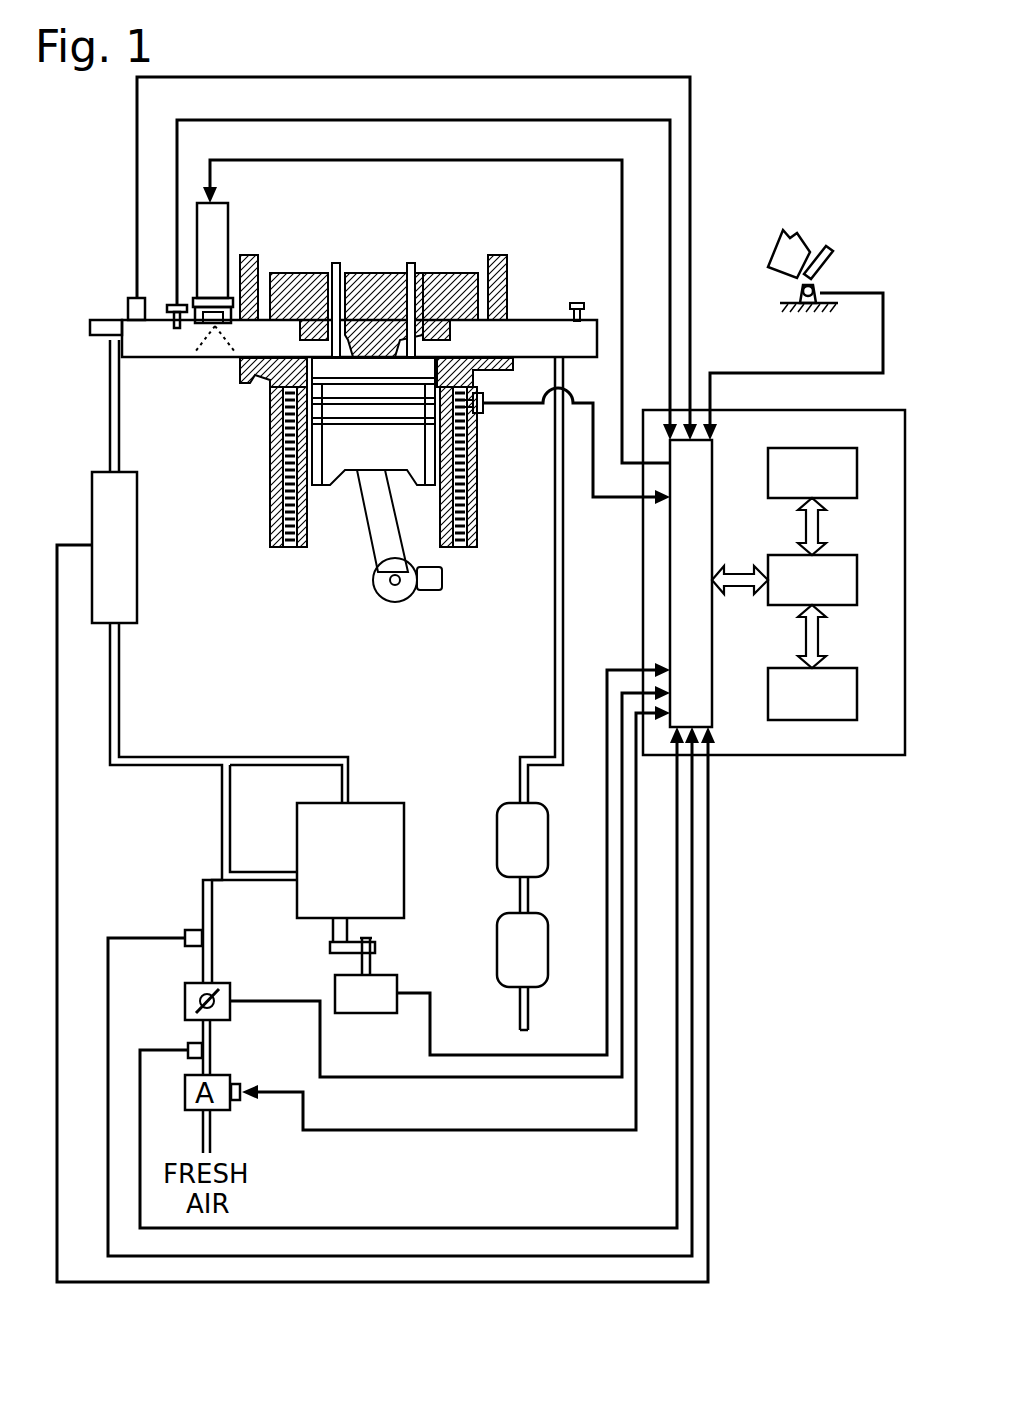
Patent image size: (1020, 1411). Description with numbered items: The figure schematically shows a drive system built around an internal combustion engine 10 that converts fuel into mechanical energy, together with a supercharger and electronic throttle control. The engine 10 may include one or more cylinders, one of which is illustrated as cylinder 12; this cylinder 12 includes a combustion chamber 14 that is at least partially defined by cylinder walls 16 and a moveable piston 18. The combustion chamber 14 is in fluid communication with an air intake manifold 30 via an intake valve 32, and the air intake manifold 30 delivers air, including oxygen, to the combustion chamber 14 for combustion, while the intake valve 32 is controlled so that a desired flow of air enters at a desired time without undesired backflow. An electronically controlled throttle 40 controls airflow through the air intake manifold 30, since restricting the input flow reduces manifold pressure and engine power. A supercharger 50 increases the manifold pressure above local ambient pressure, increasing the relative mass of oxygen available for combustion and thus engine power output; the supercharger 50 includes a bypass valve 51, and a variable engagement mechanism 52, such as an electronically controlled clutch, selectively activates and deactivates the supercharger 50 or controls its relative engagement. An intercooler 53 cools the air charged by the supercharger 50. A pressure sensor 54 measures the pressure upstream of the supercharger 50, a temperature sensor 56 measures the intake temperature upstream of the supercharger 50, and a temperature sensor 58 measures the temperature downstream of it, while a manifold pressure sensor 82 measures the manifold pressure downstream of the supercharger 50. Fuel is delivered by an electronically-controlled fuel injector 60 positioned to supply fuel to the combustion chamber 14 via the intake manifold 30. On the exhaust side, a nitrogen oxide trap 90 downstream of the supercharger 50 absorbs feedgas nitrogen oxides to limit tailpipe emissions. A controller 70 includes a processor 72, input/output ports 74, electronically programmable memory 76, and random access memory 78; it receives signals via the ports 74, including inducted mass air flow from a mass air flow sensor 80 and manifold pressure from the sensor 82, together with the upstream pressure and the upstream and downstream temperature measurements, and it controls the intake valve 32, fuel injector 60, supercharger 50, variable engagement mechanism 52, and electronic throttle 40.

The internal combustion engine 10 is at (118, 176).
The cylinder 12 is at (240, 384).
The combustion chamber 14 is at (325, 378).
The cylinder walls 16 is at (318, 550).
The moveable piston 18 is at (357, 458).
The air intake manifold 30 is at (167, 352).
The intake valve 32 is at (330, 345).
The electronically controlled throttle 40 is at (215, 983).
The supercharger 50 is at (357, 803).
The bypass valve 51 is at (215, 808).
The variable engagement mechanism 52 is at (335, 985).
The intercooler 53 is at (92, 480).
The pressure sensor 54 is at (185, 934).
The temperature sensor 56 is at (190, 1057).
The temperature sensor 58 is at (128, 306).
The electronically-controlled fuel injector 60 is at (230, 218).
The controller 70 is at (858, 410).
The processor 72 is at (822, 555).
The input/output ports 74 is at (712, 472).
The electronically programmable memory 76 is at (800, 448).
The random access memory 78 is at (822, 668).
The mass air flow sensor 80 is at (242, 1083).
The manifold pressure sensor 82 is at (172, 304).
The NOx trap 90 is at (548, 832).